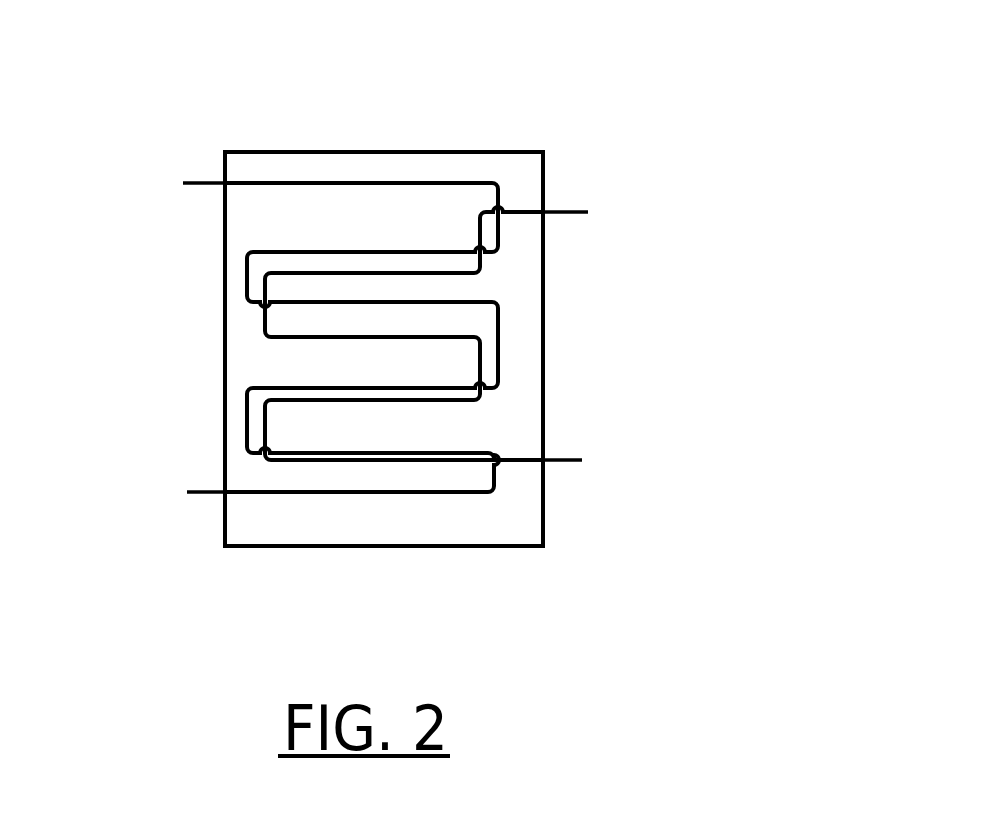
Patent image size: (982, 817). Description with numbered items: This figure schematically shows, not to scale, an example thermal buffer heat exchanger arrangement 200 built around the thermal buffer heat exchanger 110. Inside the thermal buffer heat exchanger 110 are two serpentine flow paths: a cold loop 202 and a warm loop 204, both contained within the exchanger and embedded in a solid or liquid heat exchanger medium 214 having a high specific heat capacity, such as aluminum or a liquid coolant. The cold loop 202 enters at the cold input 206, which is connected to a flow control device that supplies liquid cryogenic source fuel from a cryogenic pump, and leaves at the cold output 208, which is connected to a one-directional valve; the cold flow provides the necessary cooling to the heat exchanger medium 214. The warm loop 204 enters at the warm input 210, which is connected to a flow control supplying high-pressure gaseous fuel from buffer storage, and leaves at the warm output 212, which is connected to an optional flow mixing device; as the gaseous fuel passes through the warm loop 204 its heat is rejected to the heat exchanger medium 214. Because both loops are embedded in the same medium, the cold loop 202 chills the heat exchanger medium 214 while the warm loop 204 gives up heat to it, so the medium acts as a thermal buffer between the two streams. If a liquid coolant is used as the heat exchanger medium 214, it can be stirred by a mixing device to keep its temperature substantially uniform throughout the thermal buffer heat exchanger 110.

The thermal buffer system 200 is at (397, 58).
The thermal buffer heat exchanger 110 is at (517, 138).
The cold loop 202 is at (232, 284).
The warm loop 204 is at (512, 337).
The cold input 206 is at (145, 490).
The cold output 208 is at (146, 191).
The warm input 210 is at (619, 225).
The warm output 212 is at (609, 476).
The heat exchanger medium 214 is at (396, 522).